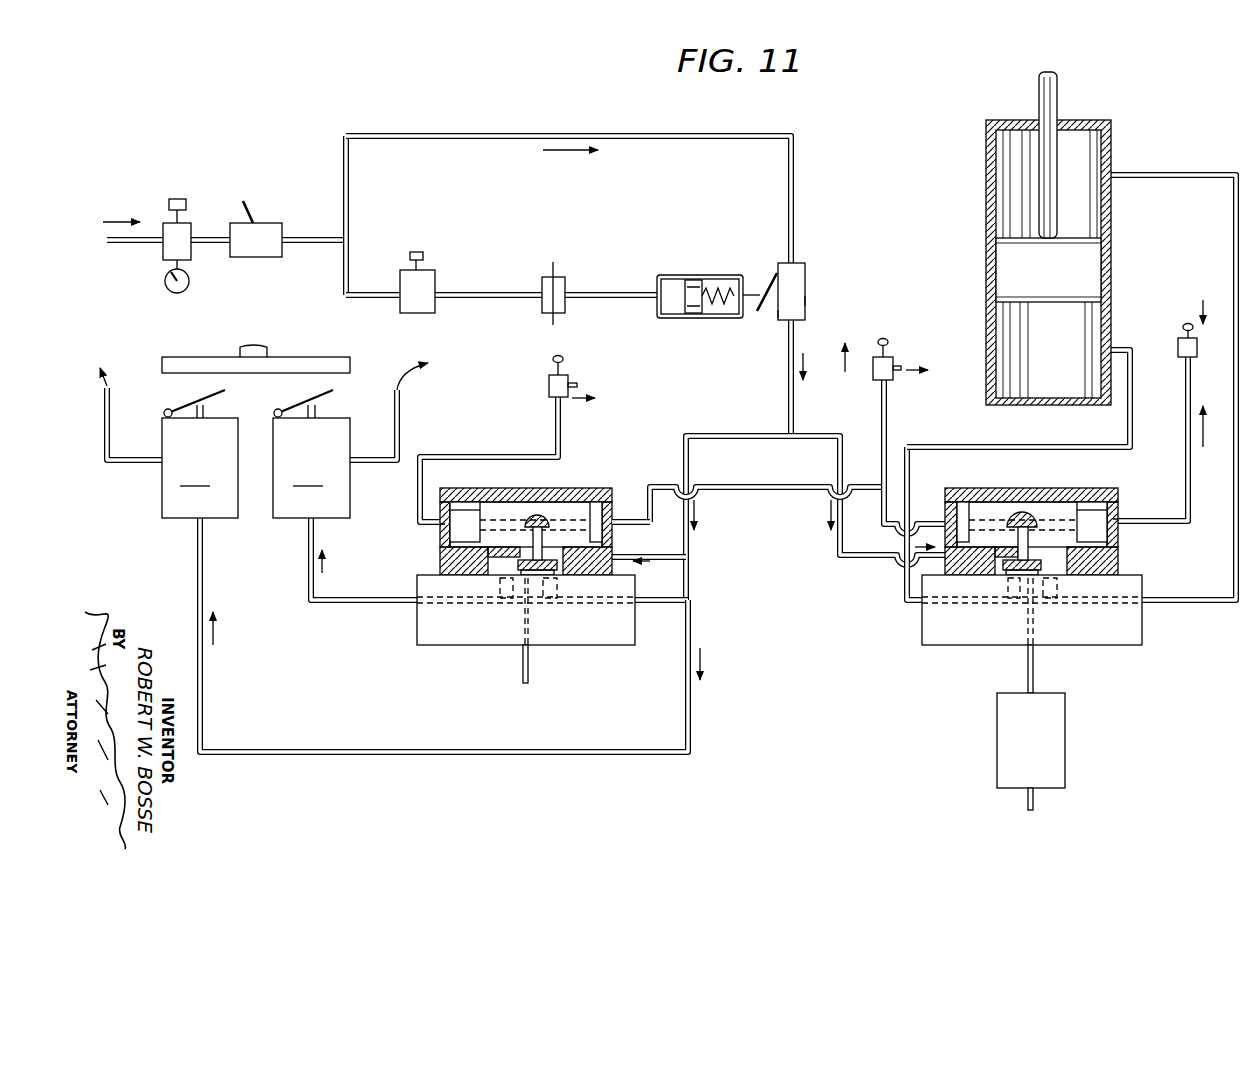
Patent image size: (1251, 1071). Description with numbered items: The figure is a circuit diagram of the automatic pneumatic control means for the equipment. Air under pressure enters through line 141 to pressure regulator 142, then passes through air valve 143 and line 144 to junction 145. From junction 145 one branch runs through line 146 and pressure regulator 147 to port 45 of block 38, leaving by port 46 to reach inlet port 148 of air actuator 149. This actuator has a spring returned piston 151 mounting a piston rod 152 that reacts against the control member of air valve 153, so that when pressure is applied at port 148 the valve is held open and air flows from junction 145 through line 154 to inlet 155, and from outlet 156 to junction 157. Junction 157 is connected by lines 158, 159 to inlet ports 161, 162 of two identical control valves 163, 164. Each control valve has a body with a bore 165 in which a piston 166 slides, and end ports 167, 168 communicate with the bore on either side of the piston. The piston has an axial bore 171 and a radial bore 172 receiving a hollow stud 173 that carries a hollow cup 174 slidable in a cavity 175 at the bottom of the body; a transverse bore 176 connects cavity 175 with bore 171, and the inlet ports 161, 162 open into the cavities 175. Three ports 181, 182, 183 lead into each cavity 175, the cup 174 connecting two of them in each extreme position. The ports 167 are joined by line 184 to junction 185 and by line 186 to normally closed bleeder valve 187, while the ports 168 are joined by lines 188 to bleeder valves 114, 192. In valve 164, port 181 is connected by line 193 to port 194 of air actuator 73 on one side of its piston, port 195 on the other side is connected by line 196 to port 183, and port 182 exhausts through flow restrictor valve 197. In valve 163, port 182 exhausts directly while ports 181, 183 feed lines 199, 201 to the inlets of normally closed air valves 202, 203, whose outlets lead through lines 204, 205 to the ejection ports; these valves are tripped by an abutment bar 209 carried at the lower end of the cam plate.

The line 141 is at (138, 240).
The pressure regulator 142 is at (190, 228).
The air valve 143 is at (238, 256).
The line 144 is at (322, 227).
The junction 145 is at (349, 241).
The line 146 is at (340, 288).
The pressure regulator 147 is at (435, 279).
The port 45 is at (538, 291).
The block 38 is at (552, 286).
The port 46 is at (569, 291).
The inlet port 148 is at (696, 295).
The air actuator 149 is at (700, 282).
The spring returned piston 151 is at (692, 314).
The piston rod 152 is at (762, 284).
The air valve 153 is at (805, 300).
The inlet 155 is at (805, 271).
The outlet 156 is at (778, 315).
The line 154 is at (568, 199).
The junction 157 is at (784, 431).
The line 184 is at (767, 488).
The junction 185 is at (878, 485).
The line 186 is at (888, 426).
The bleeder valve 187 is at (885, 360).
The line 159 is at (846, 569).
The inlet port 161 is at (624, 553).
The inlet port 162 is at (943, 560).
The line 158 is at (688, 545).
The control valve 163 is at (586, 476).
The control valve 164 is at (1060, 484).
The bore 165 is at (467, 518).
The piston 166 is at (490, 510).
The port 167 is at (616, 520).
The port 168 is at (440, 530).
The axial bore 171 is at (1013, 520).
The radial bore 172 is at (545, 519).
The hollow stud 173 is at (537, 518).
The hollow cup 174 is at (559, 575).
The cavity 175 is at (613, 568).
The transverse bore 176 is at (500, 567).
The port 181 is at (483, 612).
The port 182 is at (516, 612).
The port 183 is at (538, 612).
The line 188 is at (554, 430).
The bleeder valve 192 is at (1197, 345).
The line 193 is at (1232, 222).
The port 194 is at (1113, 173).
The port 195 is at (1112, 347).
The line 196 is at (1051, 441).
The flow restrictor valve 197 is at (997, 729).
The line 199 is at (347, 606).
The line 201 is at (476, 750).
The air valve 202 is at (311, 454).
The air valve 203 is at (200, 454).
The line 204 is at (398, 419).
The line 205 is at (103, 410).
The abutment bar 209 is at (350, 364).
The air actuator 73 is at (980, 197).
The bleeder valve 114 is at (565, 379).